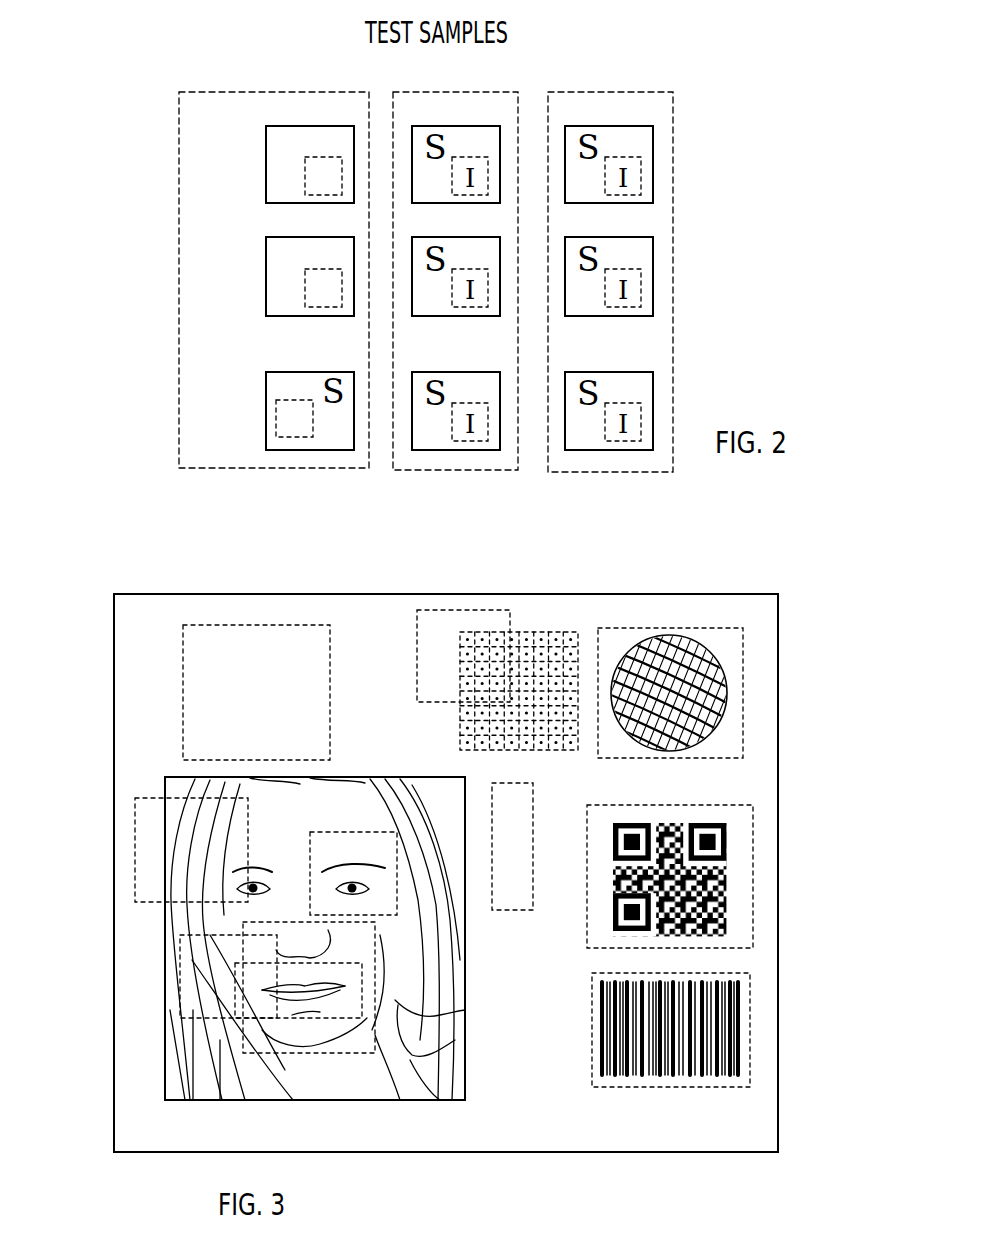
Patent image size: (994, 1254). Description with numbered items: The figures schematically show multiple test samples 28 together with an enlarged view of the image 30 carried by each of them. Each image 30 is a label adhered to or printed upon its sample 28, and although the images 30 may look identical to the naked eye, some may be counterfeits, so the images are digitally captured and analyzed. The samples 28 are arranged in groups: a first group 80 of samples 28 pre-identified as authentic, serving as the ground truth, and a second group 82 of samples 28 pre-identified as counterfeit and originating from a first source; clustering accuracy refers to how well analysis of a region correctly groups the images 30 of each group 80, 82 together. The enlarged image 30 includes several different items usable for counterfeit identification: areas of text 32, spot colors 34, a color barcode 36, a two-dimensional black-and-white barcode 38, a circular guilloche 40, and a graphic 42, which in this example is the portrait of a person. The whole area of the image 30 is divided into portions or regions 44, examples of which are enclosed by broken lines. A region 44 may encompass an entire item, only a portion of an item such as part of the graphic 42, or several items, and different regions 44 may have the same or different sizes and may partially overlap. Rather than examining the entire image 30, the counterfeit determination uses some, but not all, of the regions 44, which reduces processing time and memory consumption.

In FIG. 2, the sample 28 is at (266, 160).
In FIG. 2, the image 30 is at (308, 437).
In FIG. 3, the image 30 is at (818, 590).
In FIG. 3, the text 32 is at (138, 650).
In FIG. 3, the spot colors 34 is at (538, 632).
In FIG. 3, the color barcode 36 is at (730, 890).
In FIG. 3, the two-dimensional black-and-white barcode 38 is at (740, 1033).
In FIG. 3, the circular guilloche 40 is at (715, 735).
In FIG. 3, the graphic 42 is at (392, 1053).
In FIG. 3, the region 44 is at (134, 866).
In FIG. 2, the first group 80 is at (213, 90).
In FIG. 2, the second group 82 is at (460, 105).